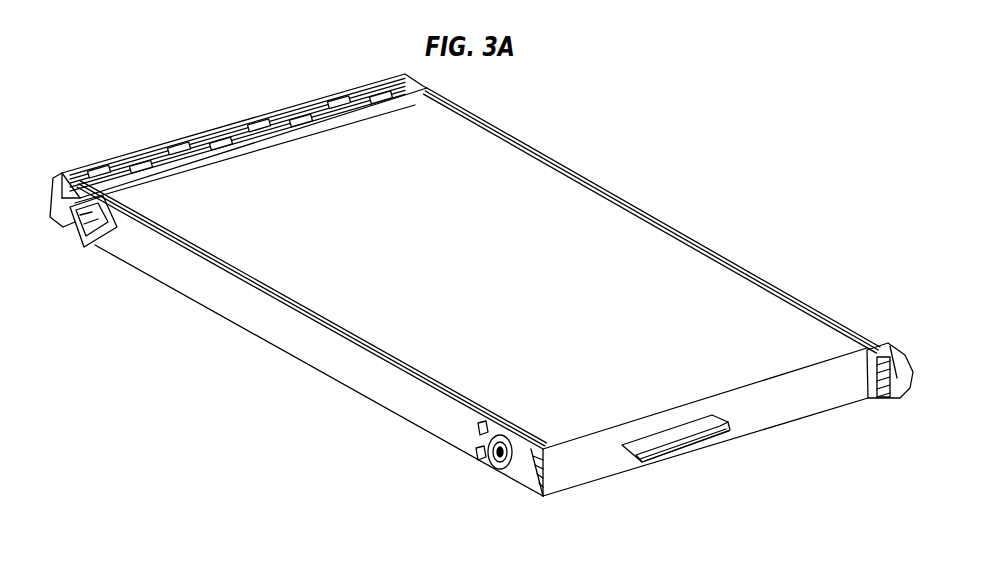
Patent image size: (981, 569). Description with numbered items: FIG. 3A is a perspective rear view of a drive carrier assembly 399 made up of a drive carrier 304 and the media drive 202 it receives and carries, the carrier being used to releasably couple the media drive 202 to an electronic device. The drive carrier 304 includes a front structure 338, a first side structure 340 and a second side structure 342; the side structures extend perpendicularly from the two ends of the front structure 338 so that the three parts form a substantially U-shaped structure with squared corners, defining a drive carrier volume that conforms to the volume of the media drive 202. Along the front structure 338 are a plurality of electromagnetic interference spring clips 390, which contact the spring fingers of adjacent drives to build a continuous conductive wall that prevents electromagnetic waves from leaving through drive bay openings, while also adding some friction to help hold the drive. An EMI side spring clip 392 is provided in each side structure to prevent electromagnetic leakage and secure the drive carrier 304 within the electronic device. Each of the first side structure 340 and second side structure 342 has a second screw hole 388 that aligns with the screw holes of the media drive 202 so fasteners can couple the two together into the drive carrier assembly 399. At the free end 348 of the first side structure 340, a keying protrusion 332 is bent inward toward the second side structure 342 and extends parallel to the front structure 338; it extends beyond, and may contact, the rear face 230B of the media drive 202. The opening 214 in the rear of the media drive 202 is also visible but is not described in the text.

The media drive 202 is at (396, 188).
The first side structure 340 is at (652, 220).
The second side structure 342 is at (311, 338).
The rear face 230B is at (790, 406).
The front structure 338 is at (244, 133).
The electromagnetic interference (EMI) spring clips 390 is at (240, 151).
The EMI side spring clip 392 is at (75, 225).
The second screw hole 388 is at (451, 492).
The connector slot 214 is at (639, 483).
The free end 348 is at (878, 339).
The keying protrusion 332 is at (855, 436).
The drive carrier 304 is at (142, 173).
The drive carrier assembly 399 is at (143, 57).